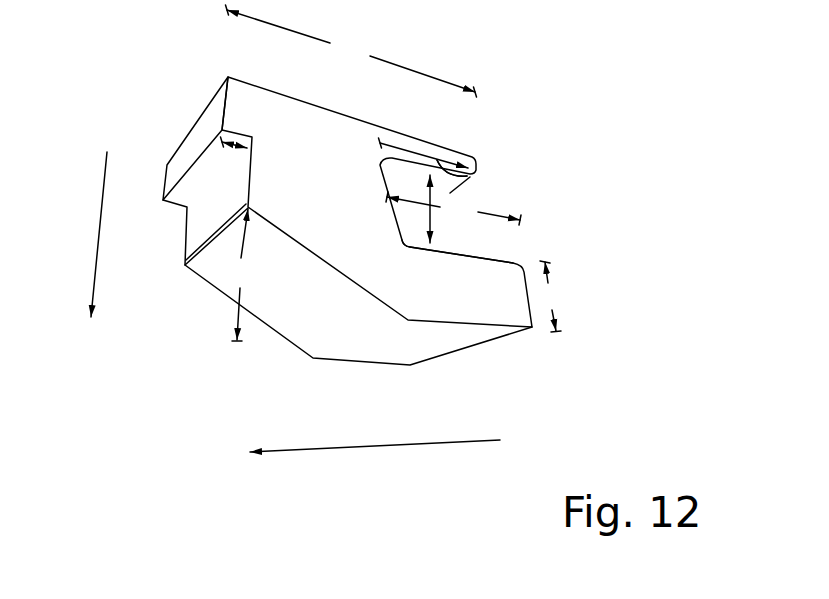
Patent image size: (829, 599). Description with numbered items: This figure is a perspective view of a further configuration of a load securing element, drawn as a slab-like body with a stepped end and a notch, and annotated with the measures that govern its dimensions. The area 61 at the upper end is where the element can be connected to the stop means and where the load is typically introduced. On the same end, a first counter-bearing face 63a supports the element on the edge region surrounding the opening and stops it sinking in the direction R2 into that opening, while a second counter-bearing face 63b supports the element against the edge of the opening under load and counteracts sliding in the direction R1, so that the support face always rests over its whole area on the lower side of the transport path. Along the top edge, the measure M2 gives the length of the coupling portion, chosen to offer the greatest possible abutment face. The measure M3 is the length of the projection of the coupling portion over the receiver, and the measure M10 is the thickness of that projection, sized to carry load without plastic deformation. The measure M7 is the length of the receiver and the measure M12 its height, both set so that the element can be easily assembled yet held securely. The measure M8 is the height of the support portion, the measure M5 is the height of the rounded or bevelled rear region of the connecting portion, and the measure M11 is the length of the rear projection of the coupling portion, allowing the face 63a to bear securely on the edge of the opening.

The area 61 is at (207, 128).
The first counter-bearing face 63a is at (207, 137).
The second counter-bearing face 63b is at (195, 230).
The measure M2 is at (351, 51).
The measure M3 is at (473, 180).
The measure M5 is at (245, 275).
The measure M7 is at (453, 209).
The measure M8 is at (553, 296).
The measure M10 is at (430, 137).
The measure M11 is at (226, 165).
The measure M12 is at (437, 228).
The direction R1 is at (375, 460).
The direction R2 is at (85, 234).